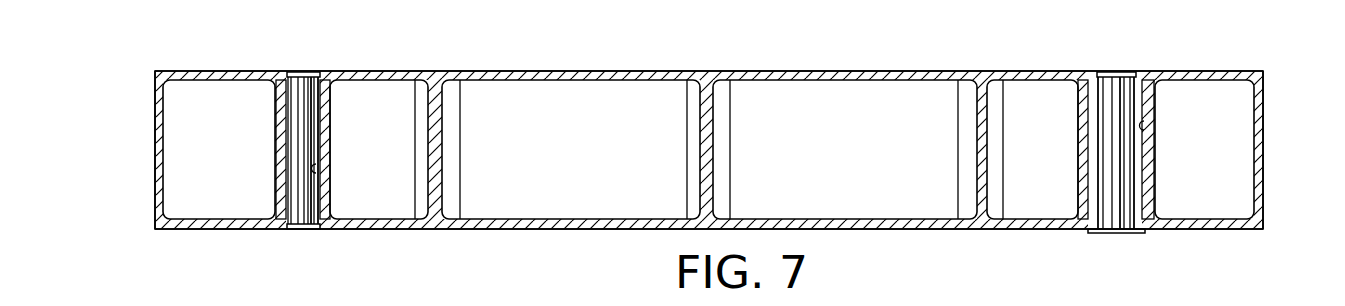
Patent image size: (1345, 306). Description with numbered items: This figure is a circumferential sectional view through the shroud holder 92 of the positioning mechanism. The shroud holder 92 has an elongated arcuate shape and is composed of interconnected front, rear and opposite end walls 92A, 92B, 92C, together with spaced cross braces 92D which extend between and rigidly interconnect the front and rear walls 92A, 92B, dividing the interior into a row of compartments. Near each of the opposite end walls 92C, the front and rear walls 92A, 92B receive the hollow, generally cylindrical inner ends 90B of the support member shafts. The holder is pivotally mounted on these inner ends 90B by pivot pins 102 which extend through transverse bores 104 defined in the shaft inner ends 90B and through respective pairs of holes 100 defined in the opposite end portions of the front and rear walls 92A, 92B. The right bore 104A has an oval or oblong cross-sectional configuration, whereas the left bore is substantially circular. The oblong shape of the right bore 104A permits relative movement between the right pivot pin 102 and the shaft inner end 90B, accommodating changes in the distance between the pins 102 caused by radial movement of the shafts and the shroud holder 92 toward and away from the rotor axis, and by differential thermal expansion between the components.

The shroud holder 92 is at (614, 66).
The front wall 92A is at (830, 70).
The rear wall 92B is at (547, 231).
The end wall 92C is at (157, 153).
The cross brace 92D is at (437, 153).
The transverse end 90B is at (330, 135).
The hole 100 is at (295, 70).
The pivot pin 102 is at (310, 229).
The transverse bore 104 is at (318, 175).
The right bore 104A is at (1150, 133).